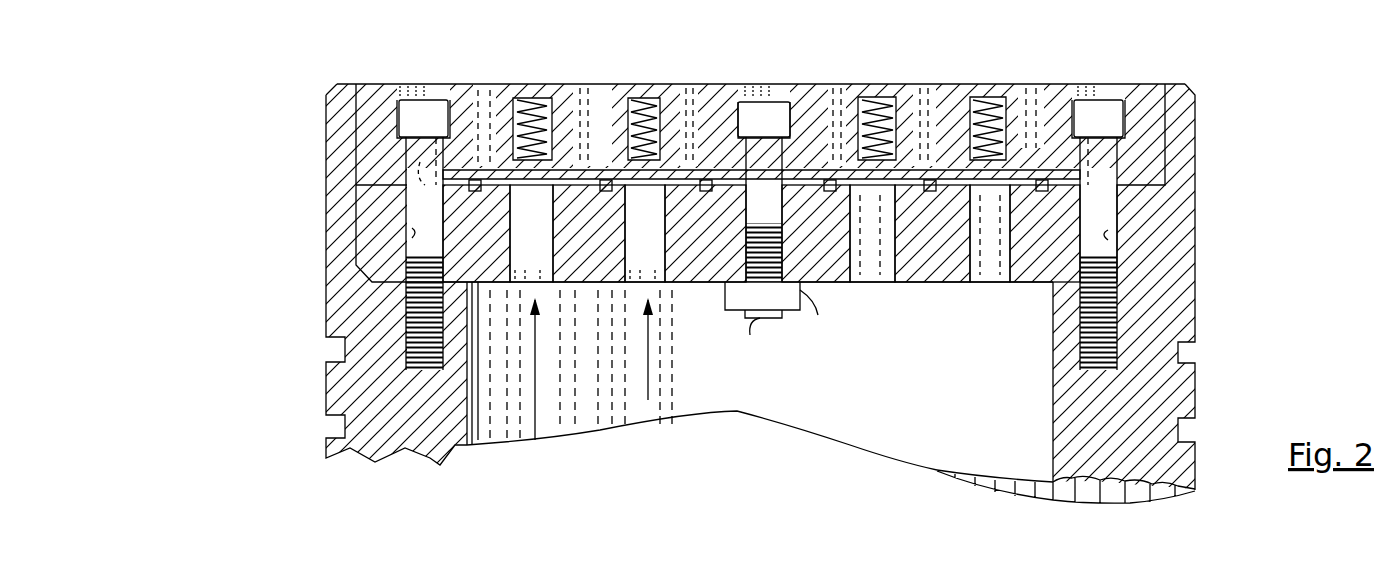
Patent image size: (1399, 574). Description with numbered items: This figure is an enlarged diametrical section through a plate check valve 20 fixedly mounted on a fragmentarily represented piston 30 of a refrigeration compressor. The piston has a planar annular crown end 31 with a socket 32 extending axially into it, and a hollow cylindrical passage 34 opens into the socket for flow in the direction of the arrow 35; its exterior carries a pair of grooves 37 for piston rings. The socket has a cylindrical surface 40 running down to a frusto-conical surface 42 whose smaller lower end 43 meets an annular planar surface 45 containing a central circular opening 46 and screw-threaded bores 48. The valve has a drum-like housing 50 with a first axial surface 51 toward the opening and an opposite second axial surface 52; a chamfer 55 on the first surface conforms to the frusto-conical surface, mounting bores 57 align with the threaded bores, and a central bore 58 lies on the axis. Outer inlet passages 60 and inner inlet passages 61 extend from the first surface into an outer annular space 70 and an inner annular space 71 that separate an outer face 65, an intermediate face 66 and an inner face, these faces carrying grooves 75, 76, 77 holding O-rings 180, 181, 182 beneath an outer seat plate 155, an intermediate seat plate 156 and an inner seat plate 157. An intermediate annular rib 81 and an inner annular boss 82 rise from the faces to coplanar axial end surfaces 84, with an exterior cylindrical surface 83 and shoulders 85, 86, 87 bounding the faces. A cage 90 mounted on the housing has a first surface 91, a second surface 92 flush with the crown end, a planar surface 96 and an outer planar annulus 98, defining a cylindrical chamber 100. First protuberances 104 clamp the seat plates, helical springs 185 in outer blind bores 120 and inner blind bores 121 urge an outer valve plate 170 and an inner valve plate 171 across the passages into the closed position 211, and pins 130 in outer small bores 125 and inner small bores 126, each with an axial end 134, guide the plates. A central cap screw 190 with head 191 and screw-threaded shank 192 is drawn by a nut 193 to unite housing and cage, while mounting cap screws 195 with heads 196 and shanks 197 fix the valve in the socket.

The plate check valve 20 is at (375, 84).
The piston 30 is at (326, 140).
The crown end 31 is at (340, 84).
The socket 32 is at (362, 127).
The passage 34 is at (580, 440).
The arrow 35 is at (648, 325).
The grooves 37 is at (342, 428).
The cylindrical surface 40 is at (1180, 133).
The frusto-conical surface 42 is at (1165, 258).
The lower end 43 is at (1160, 276).
The annular planar surface 45 is at (1053, 285).
The central circular opening 46 is at (478, 355).
The screw-threaded bores 48 is at (416, 330).
The housing 50 is at (875, 362).
The first axial surface 51 is at (700, 290).
The second axial surface 52 is at (380, 183).
The chamfer 55 is at (372, 282).
The mounting bores 57 is at (412, 235).
The central bore 58 is at (746, 225).
The outer inlet passages 60 is at (531, 233).
The inner inlet passages 61 is at (645, 233).
The outer face 65 is at (465, 188).
The intermediate face 66 is at (582, 190).
The outer annular space 70 is at (527, 193).
The inner annular space 71 is at (643, 193).
The groove 75 is at (480, 196).
The groove 76 is at (590, 200).
The groove 77 is at (703, 196).
The intermediate annular rib 81 is at (606, 190).
The inner annular boss 82 is at (798, 158).
The exterior cylindrical surface 83 is at (420, 162).
The axial end surfaces 84 is at (792, 132).
The shoulder 85 is at (1060, 170).
The shoulder 86 is at (588, 175).
The shoulder 87 is at (716, 183).
The cage 90 is at (799, 56).
The first surface 91 is at (1152, 190).
The second surface 92 is at (1160, 82).
The planar surface 96 is at (892, 108).
The outer planar annulus 98 is at (1195, 172).
The cylindrical chamber 100 is at (553, 160).
The first protuberances 104 is at (826, 186).
The outer blind bores 120 is at (535, 108).
The inner blind bores 121 is at (650, 108).
The outer small bores 125 is at (1035, 120).
The inner small bores 126 is at (838, 140).
The pins 130 is at (500, 100).
The axial end 134 is at (668, 170).
The outer seat plate 155 is at (472, 140).
The intermediate seat plate 156 is at (578, 140).
The inner seat plate 157 is at (690, 150).
The outer valve plate 170 is at (530, 214).
The inner valve plate 171 is at (642, 214).
The O-ring 180 is at (1044, 186).
The O-ring 181 is at (936, 196).
The O-ring 182 is at (832, 196).
The helical springs 185 is at (520, 100).
The central cap screw 190 is at (760, 169).
The head 191 is at (762, 100).
The screw-threaded shank 192 is at (817, 315).
The nut 193 is at (760, 338).
The mounting cap screws 195 is at (761, 209).
The head 196 is at (430, 90).
The shank 197 is at (406, 310).
The closed position 211 is at (950, 176).